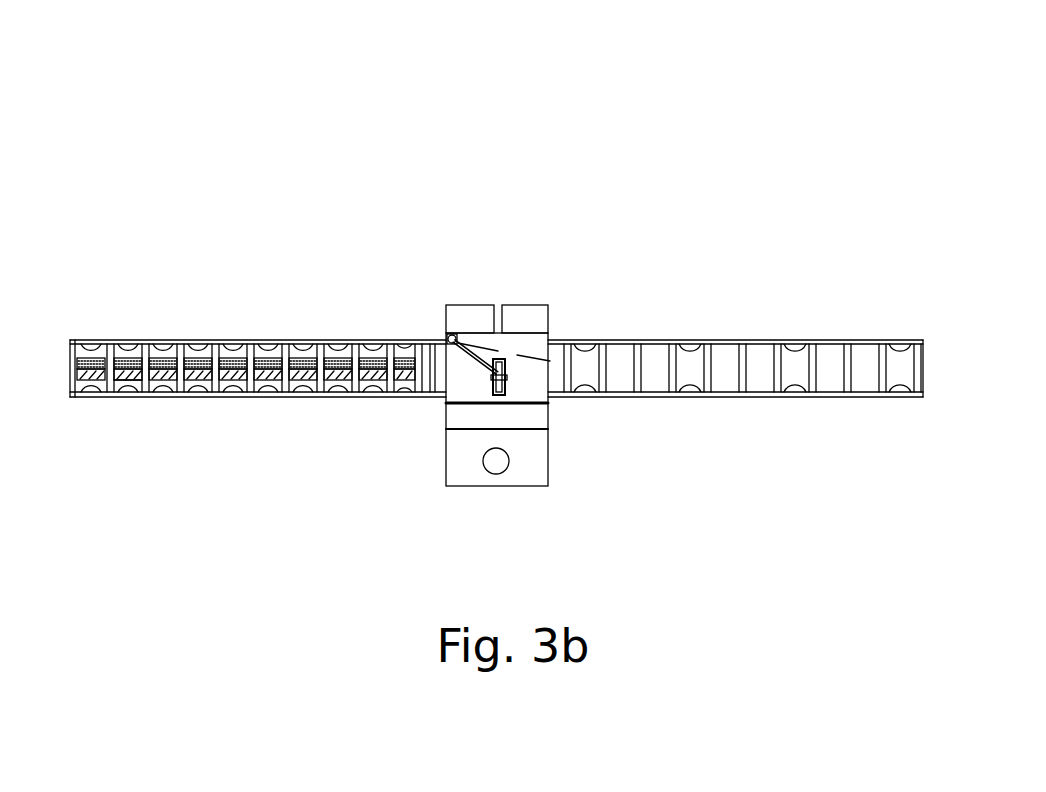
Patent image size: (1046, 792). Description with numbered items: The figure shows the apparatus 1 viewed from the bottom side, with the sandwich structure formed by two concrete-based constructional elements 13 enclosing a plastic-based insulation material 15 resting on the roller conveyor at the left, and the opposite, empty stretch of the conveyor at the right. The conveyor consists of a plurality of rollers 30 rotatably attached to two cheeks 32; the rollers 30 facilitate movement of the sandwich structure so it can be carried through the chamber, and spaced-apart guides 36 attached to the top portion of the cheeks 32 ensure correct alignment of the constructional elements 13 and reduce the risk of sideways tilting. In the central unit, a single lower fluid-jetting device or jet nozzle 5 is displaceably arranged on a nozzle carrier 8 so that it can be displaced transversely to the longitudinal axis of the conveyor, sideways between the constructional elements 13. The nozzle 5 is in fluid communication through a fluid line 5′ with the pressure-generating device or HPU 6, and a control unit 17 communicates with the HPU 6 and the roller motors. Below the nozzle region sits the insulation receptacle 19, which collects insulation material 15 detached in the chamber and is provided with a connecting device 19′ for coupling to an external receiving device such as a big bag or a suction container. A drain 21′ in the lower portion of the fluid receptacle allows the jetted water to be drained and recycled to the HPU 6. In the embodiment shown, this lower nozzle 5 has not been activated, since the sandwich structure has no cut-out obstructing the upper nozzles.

The apparatus 1 is at (598, 135).
The fluid-jetting device 5 is at (512, 370).
The fluid line 5′ is at (483, 358).
The pressure-generating device 6 is at (460, 306).
The nozzle carrier 8 is at (512, 388).
The concrete-based constructional element 13 is at (160, 356).
The plastic-based insulation material 15 is at (140, 373).
The control unit 17 is at (527, 306).
The insulation receptacle 19 is at (447, 453).
The connecting device 19′ is at (510, 462).
The drain 21′ is at (447, 337).
The roller 30 is at (745, 368).
The cheek 32 is at (860, 340).
The guide 36 is at (792, 340).